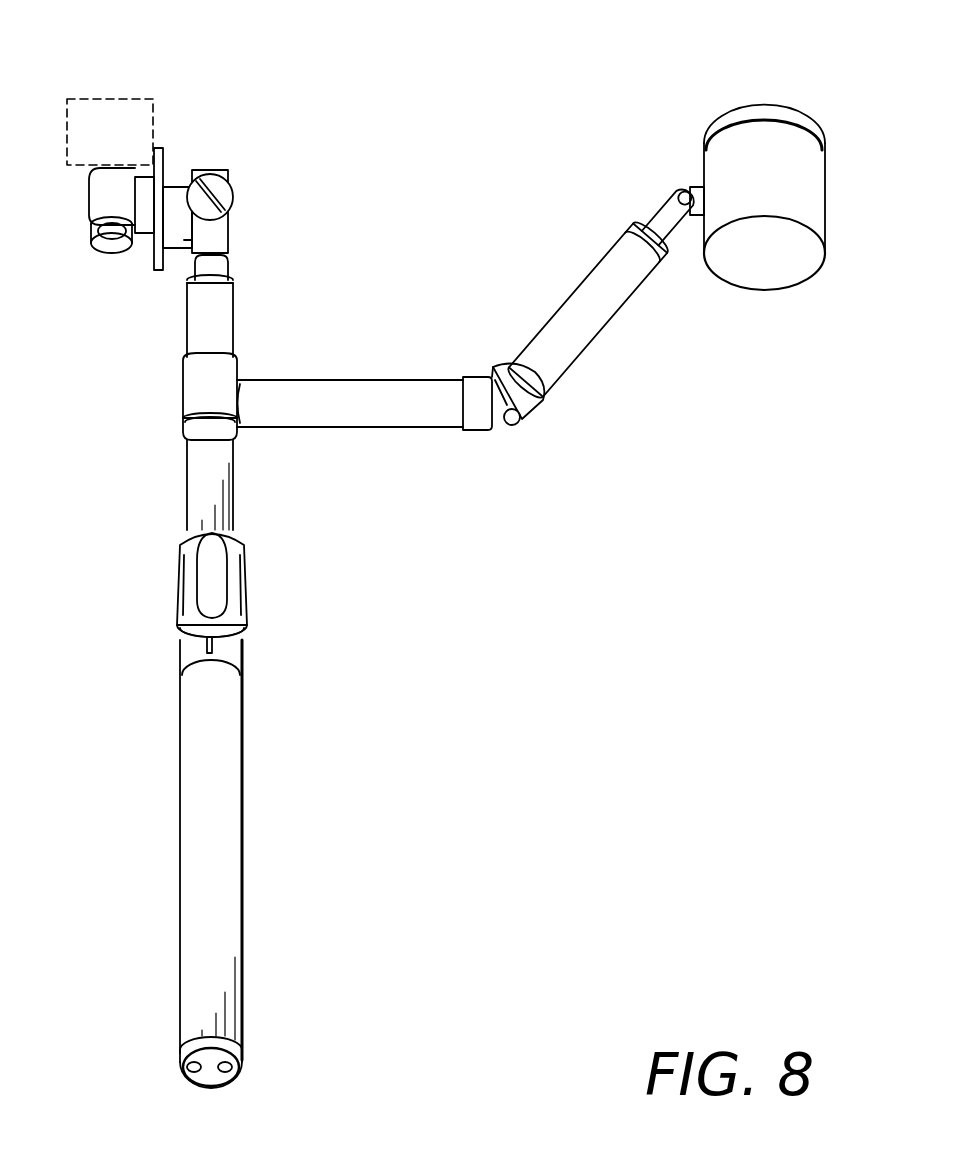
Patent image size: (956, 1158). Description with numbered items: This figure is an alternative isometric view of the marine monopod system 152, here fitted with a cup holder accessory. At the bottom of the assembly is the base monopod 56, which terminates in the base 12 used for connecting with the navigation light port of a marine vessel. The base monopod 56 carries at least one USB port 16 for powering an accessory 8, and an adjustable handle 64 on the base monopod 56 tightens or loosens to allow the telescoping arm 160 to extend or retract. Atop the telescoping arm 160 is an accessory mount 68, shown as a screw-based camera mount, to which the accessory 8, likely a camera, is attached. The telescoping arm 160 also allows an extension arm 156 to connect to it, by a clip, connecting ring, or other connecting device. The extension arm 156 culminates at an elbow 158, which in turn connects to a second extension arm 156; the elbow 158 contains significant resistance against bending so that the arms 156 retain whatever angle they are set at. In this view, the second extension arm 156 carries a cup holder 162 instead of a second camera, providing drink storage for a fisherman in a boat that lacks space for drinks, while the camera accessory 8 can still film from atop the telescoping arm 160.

The accessory 8 is at (100, 97).
The monopod system 152 is at (298, 76).
The accessory mount 68 is at (235, 187).
The cup holder 162 is at (725, 113).
The extension arm 156 is at (563, 300).
The elbow 158 is at (520, 420).
The telescoping arm 160 is at (233, 490).
The adjustable handle 64 is at (247, 593).
The USB port 16 is at (215, 647).
The base monopod 56 is at (180, 878).
The base 12 is at (243, 1058).